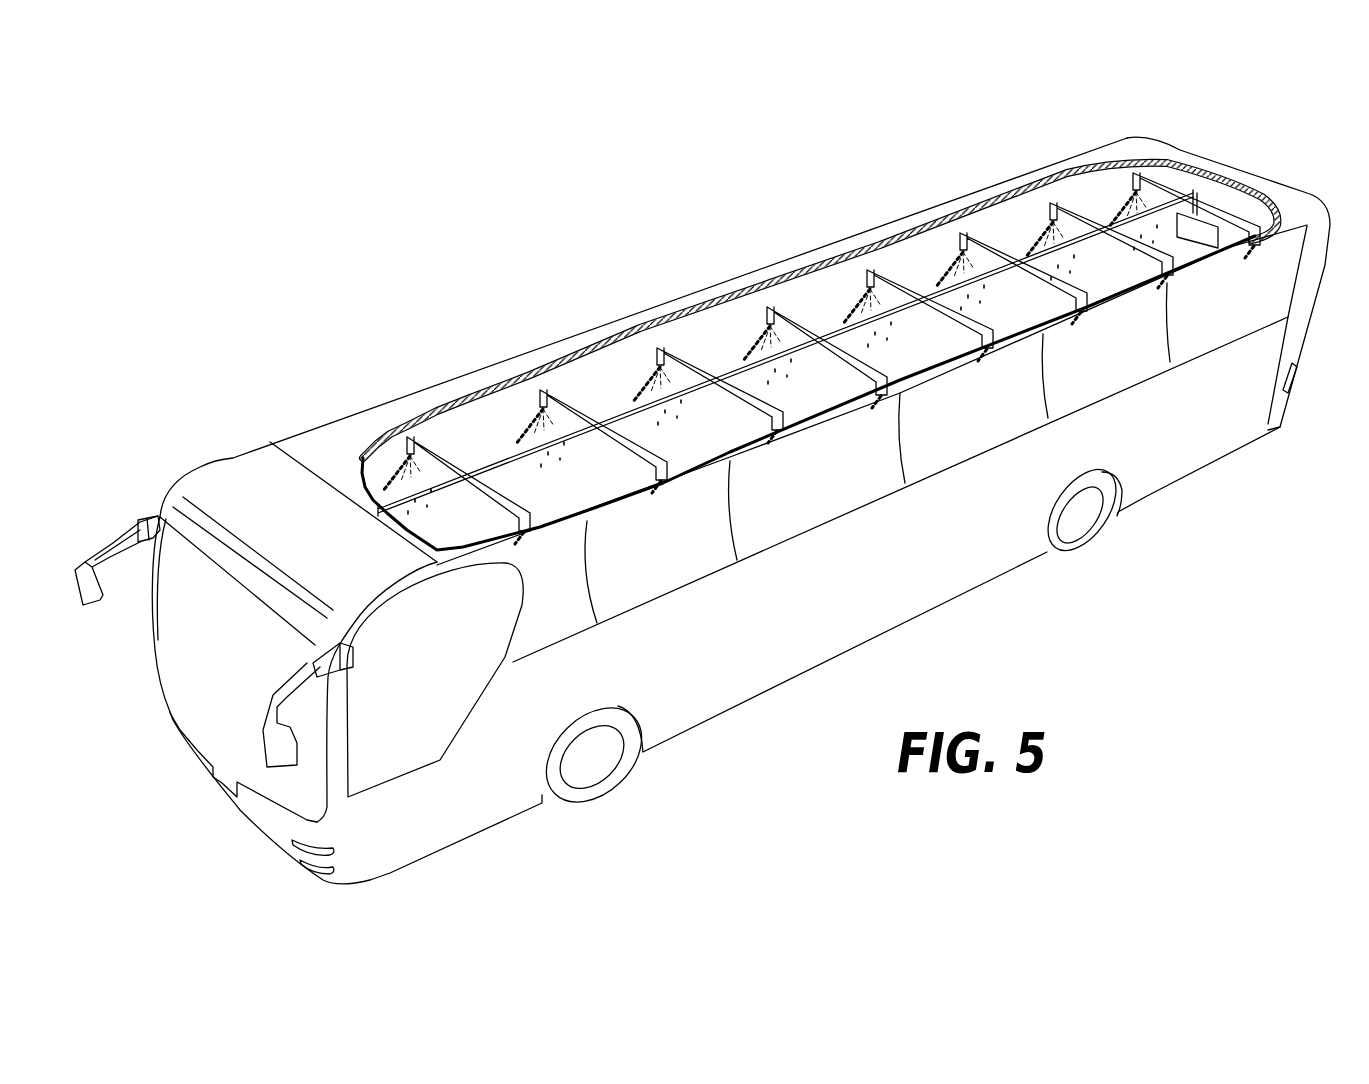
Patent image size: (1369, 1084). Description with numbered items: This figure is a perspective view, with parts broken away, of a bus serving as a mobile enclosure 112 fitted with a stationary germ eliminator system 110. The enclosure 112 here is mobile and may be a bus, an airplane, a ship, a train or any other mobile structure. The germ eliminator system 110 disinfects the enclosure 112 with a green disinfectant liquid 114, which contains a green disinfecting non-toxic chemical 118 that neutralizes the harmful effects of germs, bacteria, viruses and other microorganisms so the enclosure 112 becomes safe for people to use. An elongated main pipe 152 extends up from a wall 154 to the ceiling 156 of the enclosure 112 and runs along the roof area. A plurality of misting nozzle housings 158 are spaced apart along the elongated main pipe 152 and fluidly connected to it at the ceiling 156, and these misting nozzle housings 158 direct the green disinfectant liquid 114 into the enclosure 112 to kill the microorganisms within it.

The germ eliminator system 110 is at (1212, 240).
The enclosure 112 is at (615, 310).
The green disinfectant liquid 114 is at (512, 408).
The green disinfecting non-toxic chemical 118 is at (747, 338).
The elongated main pipe 152 is at (1126, 210).
The wall 154 is at (297, 523).
The ceiling 156 is at (837, 250).
The misting nozzle housings 158 is at (953, 240).